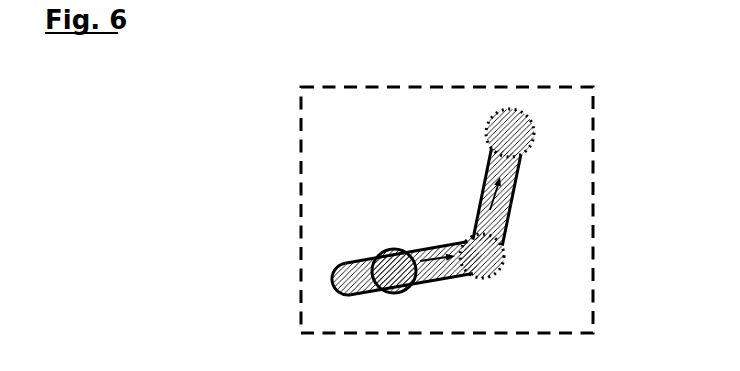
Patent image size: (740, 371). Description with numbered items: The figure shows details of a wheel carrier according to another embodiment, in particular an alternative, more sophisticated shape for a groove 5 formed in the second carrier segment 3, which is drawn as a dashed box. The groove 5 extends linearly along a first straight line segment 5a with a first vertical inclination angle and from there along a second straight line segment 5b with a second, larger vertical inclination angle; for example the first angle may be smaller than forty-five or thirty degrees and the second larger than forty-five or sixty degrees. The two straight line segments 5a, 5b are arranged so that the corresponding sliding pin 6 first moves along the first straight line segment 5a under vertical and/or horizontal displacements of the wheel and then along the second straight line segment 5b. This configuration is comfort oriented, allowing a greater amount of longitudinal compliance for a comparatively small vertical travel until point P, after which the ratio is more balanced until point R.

The second carrier segment 3 is at (360, 97).
The groove 5 is at (396, 202).
The first straight line segment 5a is at (431, 236).
The second straight line segment 5b is at (472, 163).
The sliding pin 6 is at (395, 250).